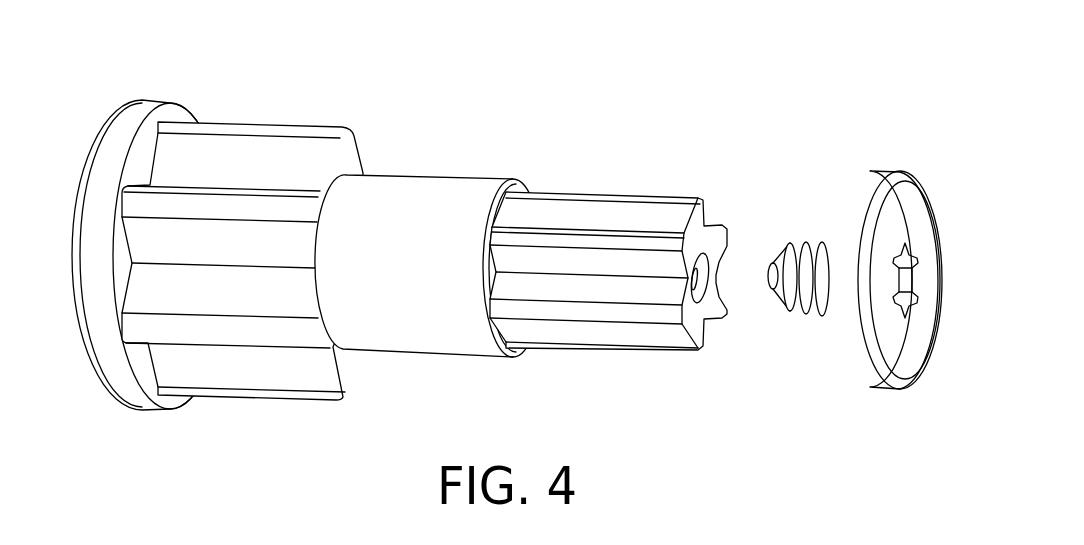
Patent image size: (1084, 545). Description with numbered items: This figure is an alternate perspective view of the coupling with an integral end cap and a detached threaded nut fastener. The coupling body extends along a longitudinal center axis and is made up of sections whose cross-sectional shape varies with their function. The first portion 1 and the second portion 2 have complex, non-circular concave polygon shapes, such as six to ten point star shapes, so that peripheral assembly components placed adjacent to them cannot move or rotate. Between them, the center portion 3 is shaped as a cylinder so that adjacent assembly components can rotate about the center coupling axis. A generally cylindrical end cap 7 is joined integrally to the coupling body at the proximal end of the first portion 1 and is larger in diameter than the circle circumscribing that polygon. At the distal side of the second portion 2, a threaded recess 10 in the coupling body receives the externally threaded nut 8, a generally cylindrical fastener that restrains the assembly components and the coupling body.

The first portion 1 is at (242, 160).
The second portion 2 is at (603, 217).
The center portion 3 is at (415, 193).
The end cap 7 is at (140, 153).
The threaded nut 8 is at (902, 222).
The threaded recess 10 is at (697, 280).